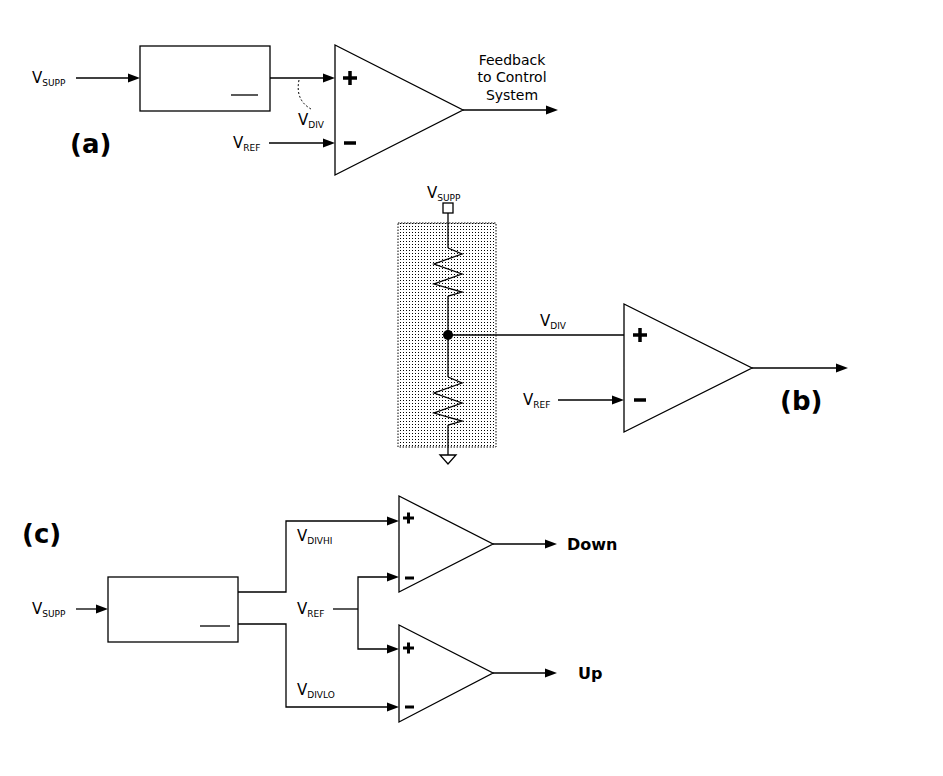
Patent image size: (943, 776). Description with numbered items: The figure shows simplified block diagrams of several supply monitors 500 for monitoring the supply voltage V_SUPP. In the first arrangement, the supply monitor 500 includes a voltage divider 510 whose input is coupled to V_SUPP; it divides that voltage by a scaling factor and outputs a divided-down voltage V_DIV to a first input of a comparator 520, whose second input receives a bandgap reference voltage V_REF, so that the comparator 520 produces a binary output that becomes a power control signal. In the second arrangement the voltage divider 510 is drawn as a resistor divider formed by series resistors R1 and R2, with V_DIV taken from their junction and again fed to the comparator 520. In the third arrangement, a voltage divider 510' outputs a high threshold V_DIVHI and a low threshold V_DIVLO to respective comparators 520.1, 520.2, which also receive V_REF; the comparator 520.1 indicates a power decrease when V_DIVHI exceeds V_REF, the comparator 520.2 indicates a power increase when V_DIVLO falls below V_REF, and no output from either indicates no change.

The supply monitor 500 is at (738, 138).
The voltage divider 510 is at (318, 255).
The voltage divider 510' is at (173, 609).
The comparator 520 is at (386, 129).
The comparator 520.1 is at (468, 561).
The comparator 520.2 is at (468, 691).
The first resistor R1 is at (462, 271).
The second resistor R2 is at (462, 400).